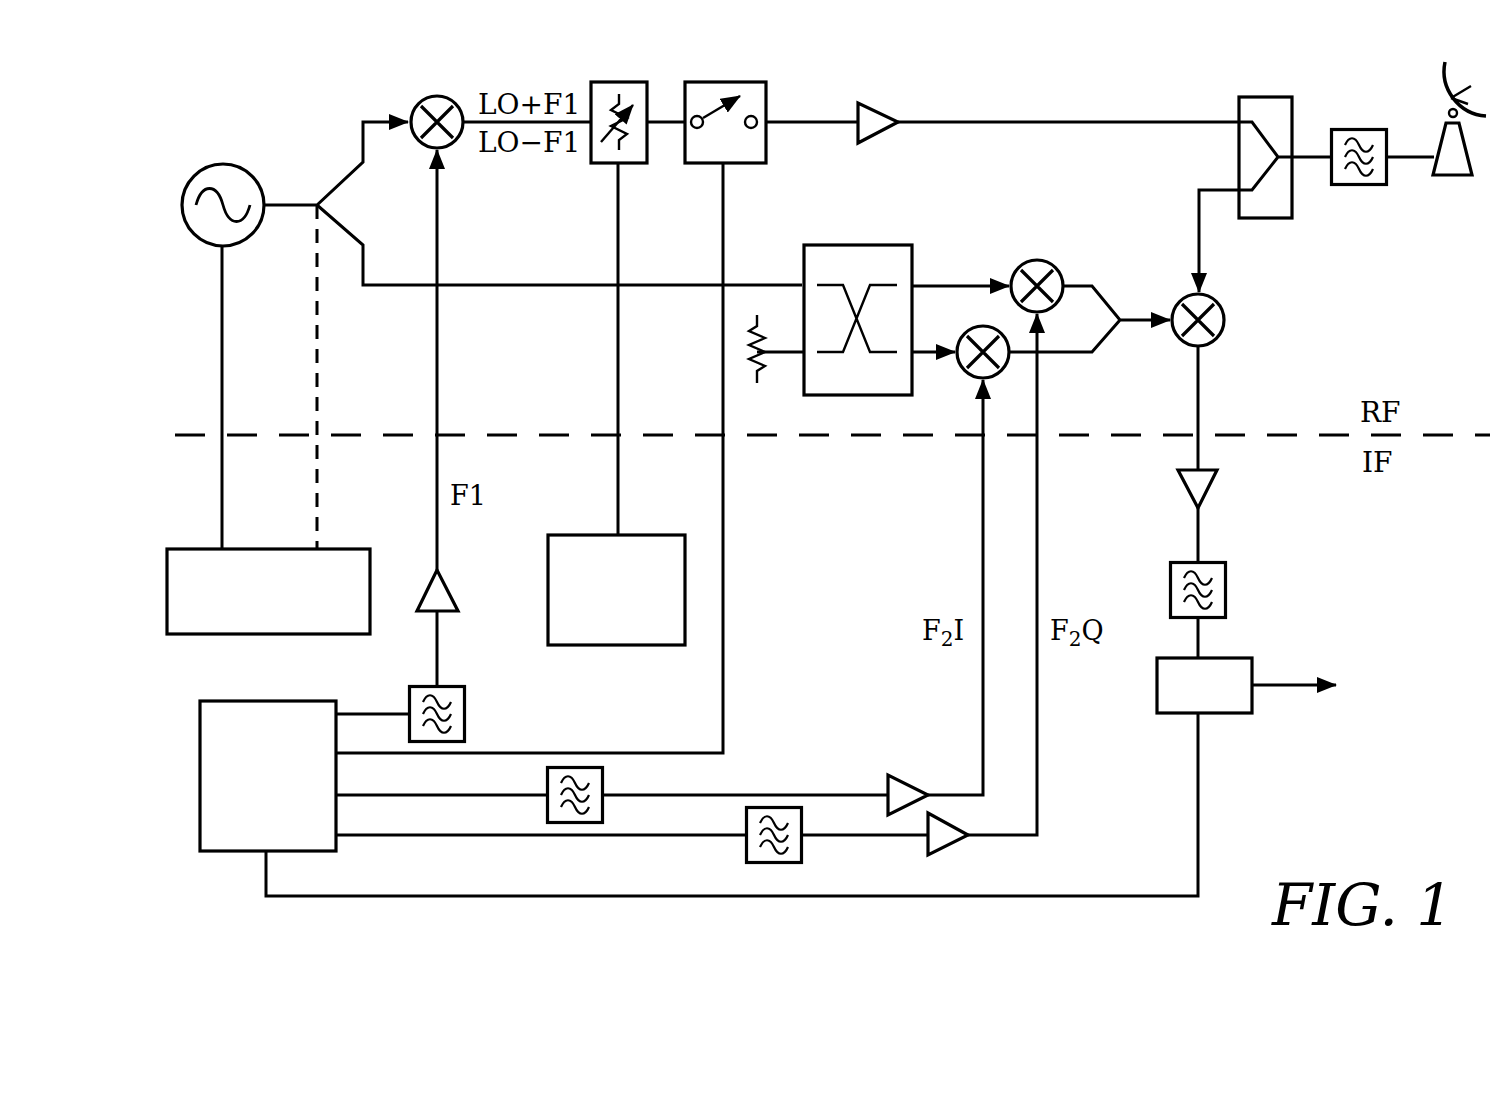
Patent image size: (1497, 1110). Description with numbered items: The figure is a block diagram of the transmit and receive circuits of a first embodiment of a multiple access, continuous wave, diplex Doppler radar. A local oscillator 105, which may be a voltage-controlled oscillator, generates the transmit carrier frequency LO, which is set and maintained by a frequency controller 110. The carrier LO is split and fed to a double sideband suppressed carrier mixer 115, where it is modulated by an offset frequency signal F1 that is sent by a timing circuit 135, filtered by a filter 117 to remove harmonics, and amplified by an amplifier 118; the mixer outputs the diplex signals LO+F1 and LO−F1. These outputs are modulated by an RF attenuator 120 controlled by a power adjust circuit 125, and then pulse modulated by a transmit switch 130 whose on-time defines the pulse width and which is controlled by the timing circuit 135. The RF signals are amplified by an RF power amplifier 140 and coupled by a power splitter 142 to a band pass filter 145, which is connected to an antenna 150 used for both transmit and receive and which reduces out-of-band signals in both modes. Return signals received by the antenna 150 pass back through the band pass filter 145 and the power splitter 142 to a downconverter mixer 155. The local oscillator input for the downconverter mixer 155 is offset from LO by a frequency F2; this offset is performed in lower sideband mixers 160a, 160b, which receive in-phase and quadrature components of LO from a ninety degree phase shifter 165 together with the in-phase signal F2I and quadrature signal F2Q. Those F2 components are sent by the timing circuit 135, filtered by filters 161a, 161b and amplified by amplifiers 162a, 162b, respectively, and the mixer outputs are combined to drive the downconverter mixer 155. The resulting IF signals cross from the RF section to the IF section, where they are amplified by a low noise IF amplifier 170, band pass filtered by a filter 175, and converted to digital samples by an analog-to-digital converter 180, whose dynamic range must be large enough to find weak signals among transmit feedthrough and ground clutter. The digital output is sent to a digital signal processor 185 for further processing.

The local oscillator 105 is at (263, 190).
The frequency controller 110 is at (358, 549).
The double sideband suppressed carrier mixer 115 is at (418, 104).
The filter 117 is at (462, 703).
The amplifier 118 is at (449, 597).
The RF attenuator 120 is at (604, 157).
The power adjust circuit 125 is at (670, 535).
The transmit switch 130 is at (753, 158).
The timing circuit 135 is at (296, 701).
The RF power amplifier 140 is at (880, 108).
The power splitter 142 is at (1250, 100).
The band pass filter 145 is at (1372, 135).
The antenna 150 is at (1443, 176).
The downconverter mixer 155 is at (1218, 313).
The lower sideband mixer 160a is at (969, 330).
The lower sideband mixer 160b is at (1037, 262).
The filter 161a is at (588, 767).
The filter 161b is at (788, 807).
The amplifier 162a is at (900, 778).
The amplifier 162b is at (947, 850).
The 90 degree phase shifter 165 is at (883, 245).
The low noise IF amplifier 170 is at (1205, 493).
The filter 175 is at (1218, 584).
The analog-to-digital converter 180 is at (1236, 665).
The digital signal processor 185 is at (1425, 725).